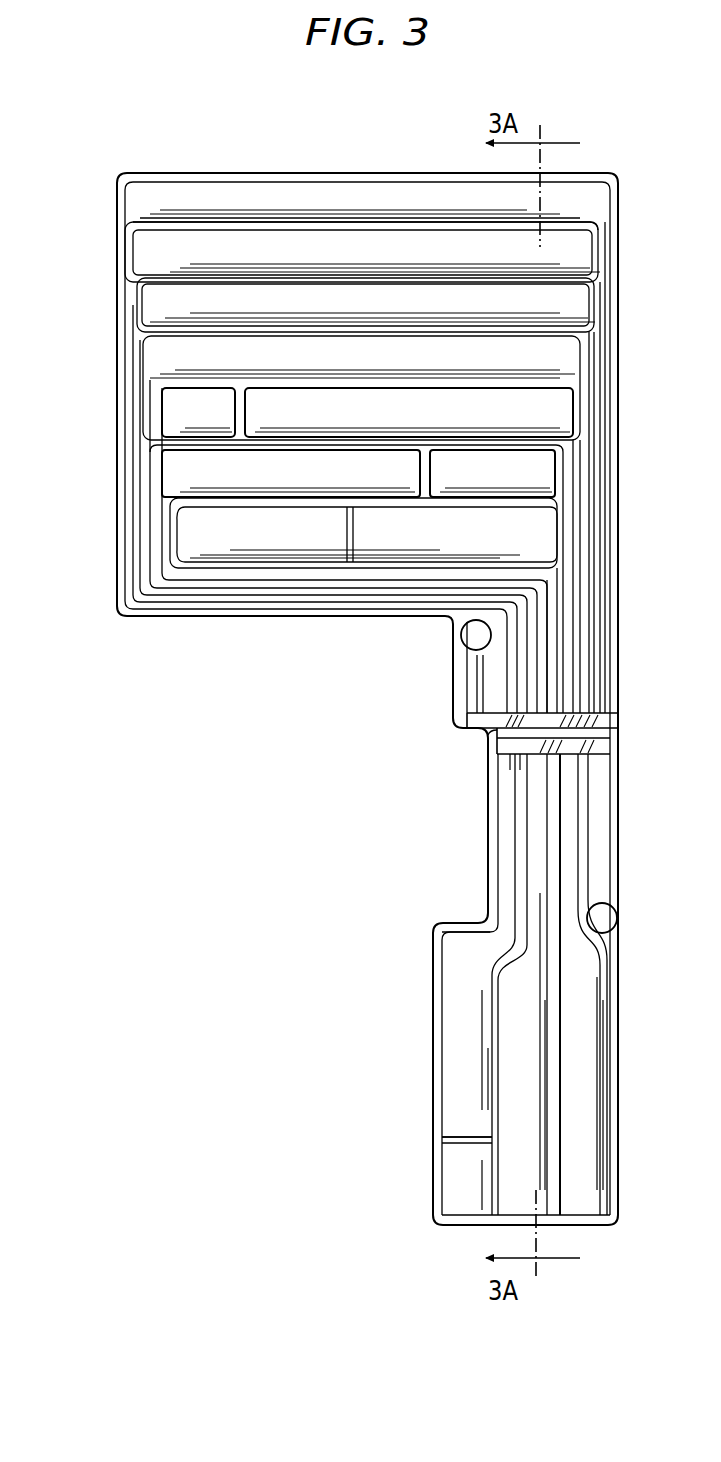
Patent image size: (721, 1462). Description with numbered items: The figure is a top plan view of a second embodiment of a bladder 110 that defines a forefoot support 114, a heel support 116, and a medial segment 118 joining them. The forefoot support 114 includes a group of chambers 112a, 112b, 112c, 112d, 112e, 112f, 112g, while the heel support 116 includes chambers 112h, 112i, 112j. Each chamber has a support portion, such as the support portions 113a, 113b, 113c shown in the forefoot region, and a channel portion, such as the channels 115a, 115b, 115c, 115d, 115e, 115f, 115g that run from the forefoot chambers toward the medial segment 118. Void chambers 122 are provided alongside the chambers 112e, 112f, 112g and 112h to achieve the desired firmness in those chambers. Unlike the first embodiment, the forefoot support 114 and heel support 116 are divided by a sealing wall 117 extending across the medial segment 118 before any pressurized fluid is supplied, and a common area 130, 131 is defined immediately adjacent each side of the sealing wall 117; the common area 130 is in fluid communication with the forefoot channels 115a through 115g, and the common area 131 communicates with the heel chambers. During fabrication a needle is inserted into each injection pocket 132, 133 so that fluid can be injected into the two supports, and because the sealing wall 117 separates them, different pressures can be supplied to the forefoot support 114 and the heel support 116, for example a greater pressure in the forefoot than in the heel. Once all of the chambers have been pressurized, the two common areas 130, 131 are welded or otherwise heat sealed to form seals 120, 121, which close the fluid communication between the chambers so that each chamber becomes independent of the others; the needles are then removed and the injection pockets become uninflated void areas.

The bladder 110 is at (280, 860).
The chamber 112a is at (361, 208).
The chamber 112b is at (215, 250).
The chamber 112c is at (158, 302).
The chamber 112d is at (186, 357).
The chamber 112e is at (539, 414).
The chamber 112f is at (203, 466).
The chamber 112g is at (522, 540).
The chamber 112h is at (458, 1018).
The chamber 112i is at (522, 1087).
The chamber 112j is at (587, 1121).
The support portion 113a is at (435, 215).
The support portion 113b is at (290, 250).
The support portion 113c is at (192, 298).
The forefoot support 114 is at (240, 128).
The channel portion 115a is at (605, 340).
The channel portion 115b is at (130, 561).
The channel portion 115c is at (595, 440).
The channel portion 115d is at (148, 587).
The channel portion 115e is at (572, 590).
The channel portion 115f is at (247, 578).
The channel portion 115g is at (557, 632).
The heel support 116 is at (393, 1099).
The sealing wall 117 is at (497, 733).
The medial segment 118 is at (443, 806).
The seal 120 is at (557, 712).
The seal 121 is at (590, 755).
The void chamber 122 is at (218, 411).
The common area 130 is at (690, 718).
The common area 131 is at (690, 745).
The injection pocket 132 is at (618, 918).
The injection pocket 133 is at (471, 634).